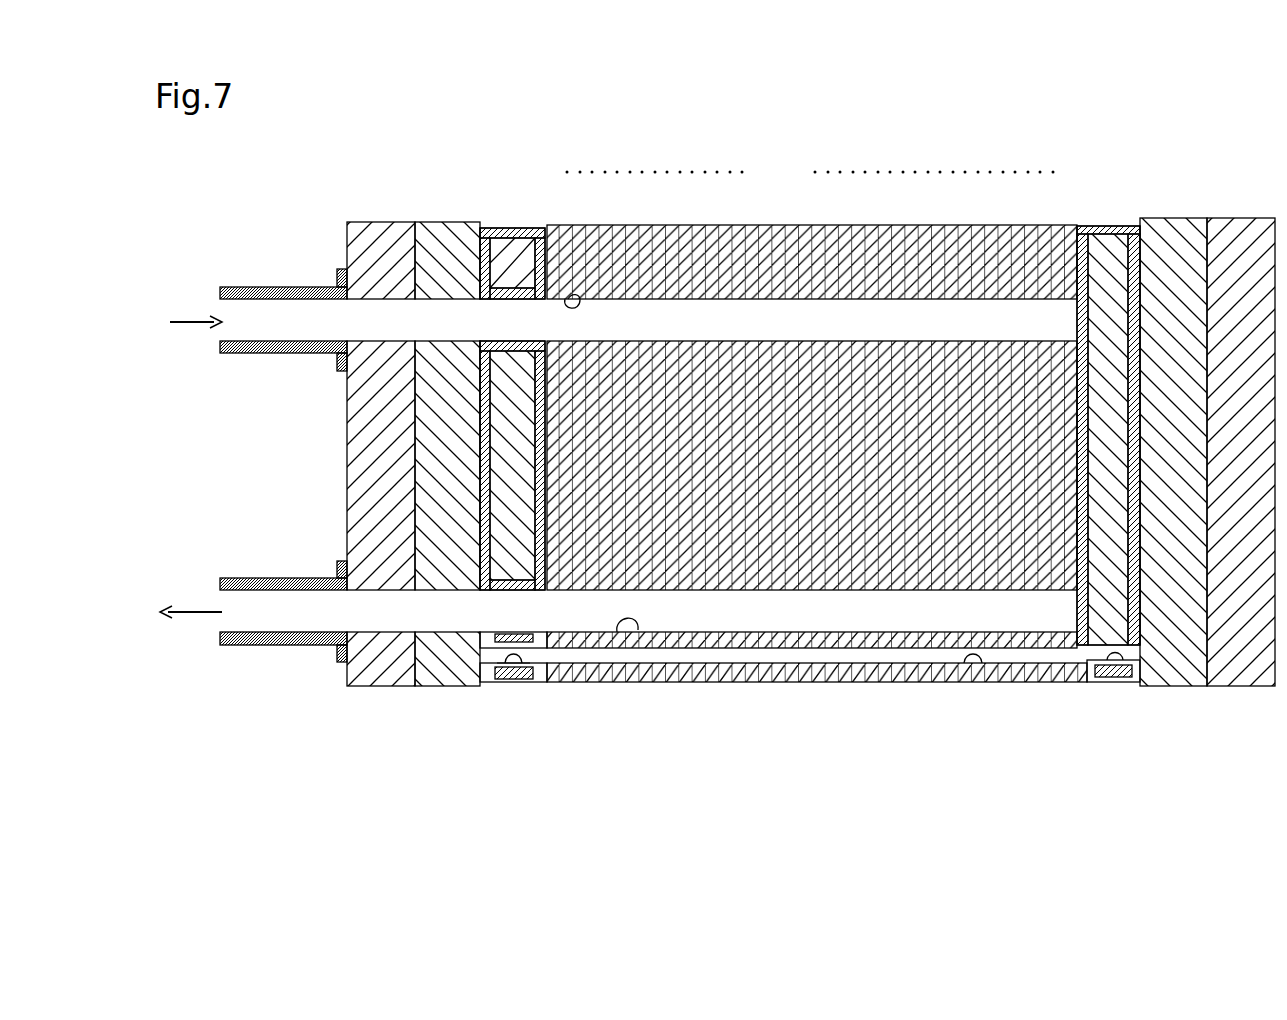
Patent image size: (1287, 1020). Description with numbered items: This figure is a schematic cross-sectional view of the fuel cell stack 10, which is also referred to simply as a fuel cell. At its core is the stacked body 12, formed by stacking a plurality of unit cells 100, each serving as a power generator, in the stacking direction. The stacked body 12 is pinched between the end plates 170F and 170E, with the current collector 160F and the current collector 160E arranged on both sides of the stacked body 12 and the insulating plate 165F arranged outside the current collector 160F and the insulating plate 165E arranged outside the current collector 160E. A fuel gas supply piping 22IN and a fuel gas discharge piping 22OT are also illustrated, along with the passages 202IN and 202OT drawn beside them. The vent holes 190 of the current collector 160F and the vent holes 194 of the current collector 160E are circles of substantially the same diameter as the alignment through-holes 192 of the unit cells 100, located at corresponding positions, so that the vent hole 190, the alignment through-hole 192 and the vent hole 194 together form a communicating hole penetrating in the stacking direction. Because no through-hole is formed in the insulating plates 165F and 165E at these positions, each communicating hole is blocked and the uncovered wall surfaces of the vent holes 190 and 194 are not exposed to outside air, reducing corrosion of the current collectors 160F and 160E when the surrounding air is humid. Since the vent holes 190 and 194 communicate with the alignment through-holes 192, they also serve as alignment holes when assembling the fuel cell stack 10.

The fuel cell stack 10 is at (944, 122).
The stacked body 12 is at (1080, 148).
The unit cell 100 is at (776, 224).
The current collector 160F is at (545, 222).
The current collector 160E is at (1140, 219).
The insulating plate 165F is at (448, 221).
The insulating plate 165E is at (1173, 217).
The end plate 170F is at (380, 221).
The end plate 170E is at (1241, 217).
The fuel gas supply piping 22IN is at (256, 286).
The fuel gas discharge piping 22OT is at (258, 578).
The vent hole 190 is at (506, 684).
The alignment through-hole 192 is at (969, 684).
The vent hole 194 is at (1113, 684).
The inlet manifold passage 202IN is at (636, 648).
The outlet manifold passage 202OT is at (571, 292).